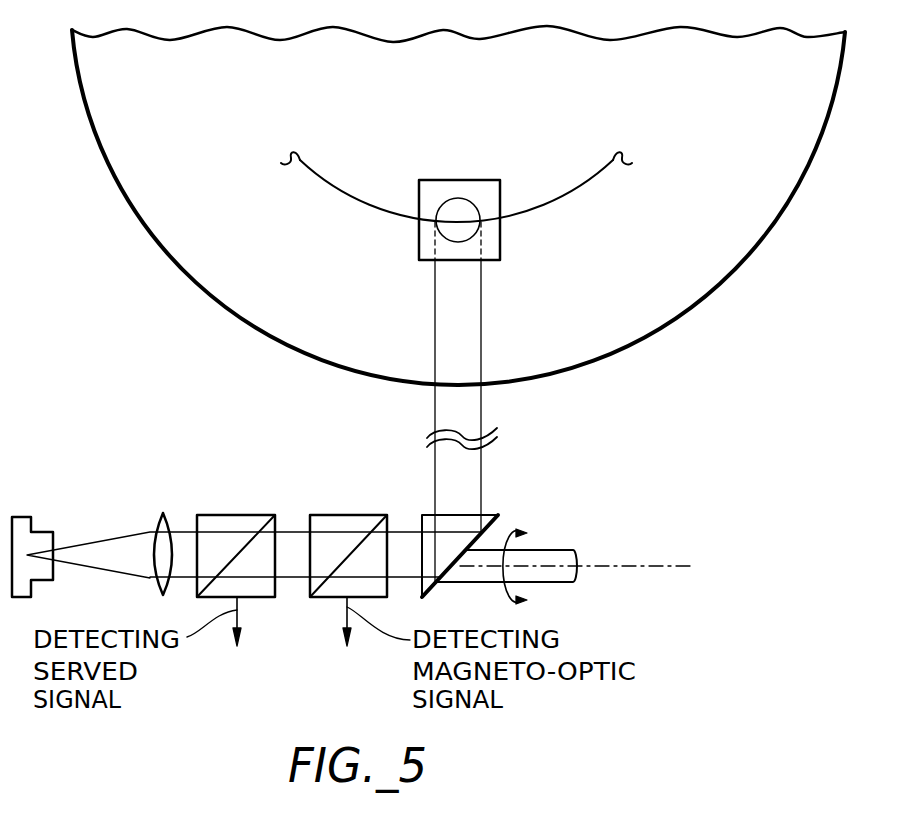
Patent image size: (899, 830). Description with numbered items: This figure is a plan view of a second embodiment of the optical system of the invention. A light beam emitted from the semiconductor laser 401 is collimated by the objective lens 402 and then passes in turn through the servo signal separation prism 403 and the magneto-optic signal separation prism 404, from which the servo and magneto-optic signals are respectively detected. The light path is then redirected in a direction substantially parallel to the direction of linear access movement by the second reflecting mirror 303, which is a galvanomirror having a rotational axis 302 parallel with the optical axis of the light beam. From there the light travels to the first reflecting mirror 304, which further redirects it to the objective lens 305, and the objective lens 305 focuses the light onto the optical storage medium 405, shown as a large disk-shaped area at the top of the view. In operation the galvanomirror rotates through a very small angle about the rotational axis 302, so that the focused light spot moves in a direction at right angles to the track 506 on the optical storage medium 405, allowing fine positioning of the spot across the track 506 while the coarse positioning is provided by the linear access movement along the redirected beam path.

The rotational axis 302 is at (640, 566).
The second reflecting mirror 303 is at (455, 515).
The first reflecting mirror 304 is at (500, 235).
The objective lens 305 is at (452, 198).
The semiconductor laser 401 is at (13, 517).
The objective lens 402 is at (152, 530).
The servo signal separation prism 403 is at (233, 515).
The magneto-optic signal separation prism 404 is at (330, 515).
The optical storage medium 405 is at (168, 220).
The track 506 is at (318, 175).